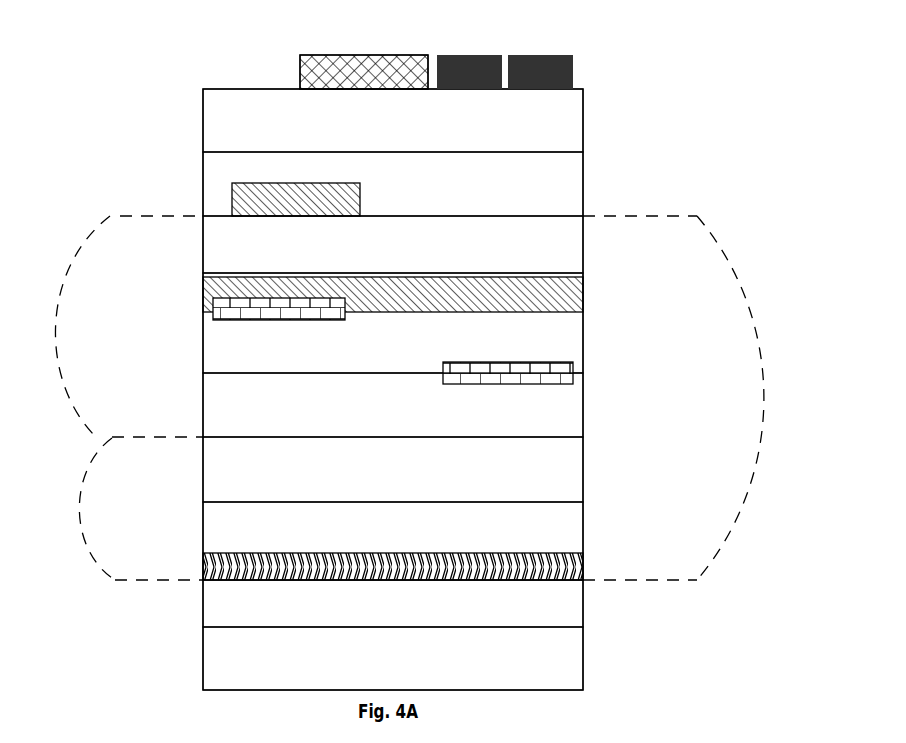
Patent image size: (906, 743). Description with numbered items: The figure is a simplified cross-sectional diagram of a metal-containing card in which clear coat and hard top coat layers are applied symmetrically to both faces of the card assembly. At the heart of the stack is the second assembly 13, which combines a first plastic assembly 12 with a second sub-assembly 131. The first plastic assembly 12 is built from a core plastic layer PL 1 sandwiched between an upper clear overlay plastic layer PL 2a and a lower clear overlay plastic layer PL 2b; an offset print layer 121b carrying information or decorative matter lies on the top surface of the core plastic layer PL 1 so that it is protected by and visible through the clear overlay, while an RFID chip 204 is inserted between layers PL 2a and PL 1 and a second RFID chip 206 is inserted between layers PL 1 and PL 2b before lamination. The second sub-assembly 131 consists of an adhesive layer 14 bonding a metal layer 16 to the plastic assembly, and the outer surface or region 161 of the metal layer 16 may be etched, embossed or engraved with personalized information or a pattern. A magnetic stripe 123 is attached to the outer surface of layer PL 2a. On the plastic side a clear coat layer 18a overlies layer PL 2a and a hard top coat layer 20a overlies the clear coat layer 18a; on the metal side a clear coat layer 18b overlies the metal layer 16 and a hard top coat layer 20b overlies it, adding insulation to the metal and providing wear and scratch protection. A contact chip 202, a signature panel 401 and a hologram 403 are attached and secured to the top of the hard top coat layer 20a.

The contact chip 202 is at (322, 55).
The signature panel 401 is at (455, 55).
The hologram 403 is at (535, 55).
The hard top coat layer 20a is at (583, 123).
The clear coat layer 18a is at (583, 183).
The magnetic stripe 123 is at (245, 183).
The clear overlay plastic layer PL 2a is at (583, 248).
The offset print layer 121b is at (583, 294).
The RFID chip 204 is at (213, 318).
The core plastic layer PL 1 is at (583, 337).
The RFID chip 206 is at (583, 368).
The clear overlay plastic layer PL 2b is at (583, 412).
The adhesive layer 14 is at (583, 470).
The metal layer 16 is at (583, 518).
The outer surface or region of metal layer 161 is at (583, 558).
The clear coat layer 18b is at (583, 597).
The hard top coat layer 20b is at (583, 659).
The first plastic assembly 12 is at (56, 321).
The second sub-assembly 131 is at (80, 503).
The second assembly 13 is at (763, 389).